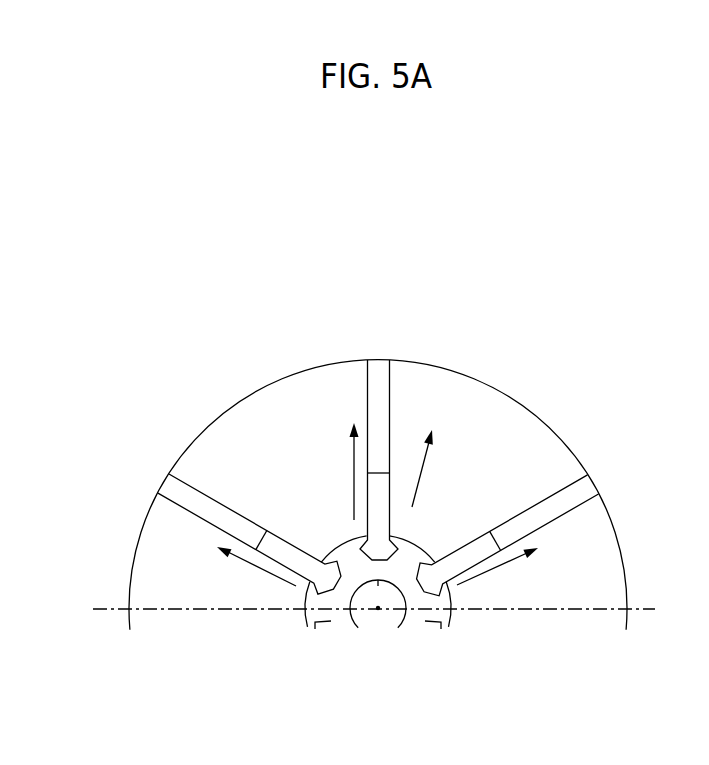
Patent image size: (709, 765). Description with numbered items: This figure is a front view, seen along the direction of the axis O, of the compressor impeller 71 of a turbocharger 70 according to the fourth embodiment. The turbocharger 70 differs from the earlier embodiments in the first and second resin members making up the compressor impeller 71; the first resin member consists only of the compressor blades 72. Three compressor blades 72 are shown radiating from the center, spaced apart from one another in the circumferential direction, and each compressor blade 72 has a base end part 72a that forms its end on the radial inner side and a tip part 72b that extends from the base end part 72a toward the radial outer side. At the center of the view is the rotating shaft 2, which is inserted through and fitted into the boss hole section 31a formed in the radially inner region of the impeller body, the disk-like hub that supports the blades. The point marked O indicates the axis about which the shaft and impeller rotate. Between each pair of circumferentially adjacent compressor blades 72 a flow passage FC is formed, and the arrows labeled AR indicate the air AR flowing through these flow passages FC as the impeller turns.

The turbocharger 70 is at (523, 338).
The compressor impeller 71 is at (436, 350).
The compressor blade 72 is at (396, 360).
The base end part 72a is at (163, 493).
The tip part 72b is at (598, 496).
The rotating shaft 2 is at (399, 617).
The boss hole section 31a is at (380, 591).
The axis O is at (378, 611).
The air AR is at (350, 447).
The flow passage FC is at (307, 491).